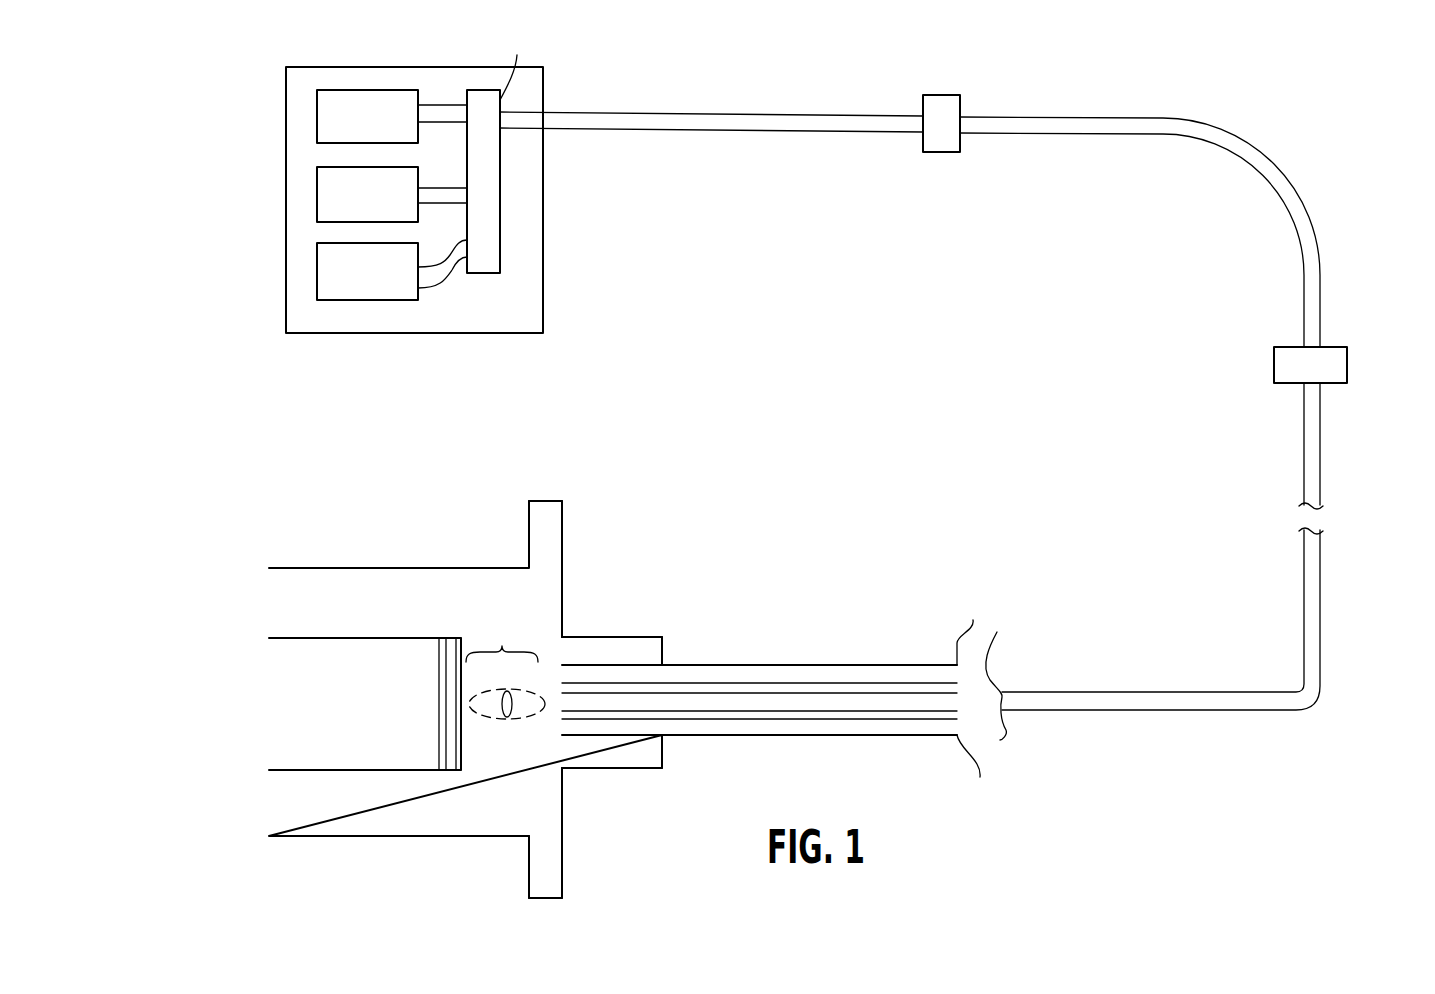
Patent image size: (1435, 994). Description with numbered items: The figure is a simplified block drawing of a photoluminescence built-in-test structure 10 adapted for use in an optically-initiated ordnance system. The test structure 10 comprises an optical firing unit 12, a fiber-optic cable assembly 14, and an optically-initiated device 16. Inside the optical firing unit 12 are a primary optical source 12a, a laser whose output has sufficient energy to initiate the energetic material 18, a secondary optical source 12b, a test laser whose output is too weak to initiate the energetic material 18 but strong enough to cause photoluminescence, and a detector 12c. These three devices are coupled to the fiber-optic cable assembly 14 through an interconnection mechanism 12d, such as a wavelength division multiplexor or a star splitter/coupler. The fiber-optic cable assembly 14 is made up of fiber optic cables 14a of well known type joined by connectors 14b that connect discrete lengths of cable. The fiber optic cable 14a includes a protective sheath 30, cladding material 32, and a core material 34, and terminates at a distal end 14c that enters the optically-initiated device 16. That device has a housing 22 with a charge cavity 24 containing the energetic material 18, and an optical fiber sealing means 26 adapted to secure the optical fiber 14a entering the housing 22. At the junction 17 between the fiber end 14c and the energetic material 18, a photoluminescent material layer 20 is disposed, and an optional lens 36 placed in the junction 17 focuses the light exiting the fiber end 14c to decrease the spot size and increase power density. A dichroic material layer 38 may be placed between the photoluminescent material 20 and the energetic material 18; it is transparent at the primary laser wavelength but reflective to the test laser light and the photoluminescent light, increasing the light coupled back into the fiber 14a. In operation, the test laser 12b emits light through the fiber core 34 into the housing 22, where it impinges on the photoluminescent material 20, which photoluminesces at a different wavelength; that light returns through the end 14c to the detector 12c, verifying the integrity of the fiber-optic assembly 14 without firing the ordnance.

The photoluminescence built-in-test structure 10 is at (743, 356).
The optical firing unit 12 is at (252, 86).
The primary optical source 12a is at (330, 92).
The secondary optical source 12b is at (325, 180).
The detector 12c is at (370, 300).
The interconnection mechanism 12d is at (492, 200).
The fiber-optic cable assembly 14 is at (1341, 134).
The fiber optic cable 14a is at (738, 113).
The connector 14b is at (942, 100).
The fiber end 14c is at (567, 718).
The optically-initiated device 16 is at (606, 589).
The junction 17 is at (502, 641).
The energetic material 18 is at (353, 650).
The photoluminescent material layer 20 is at (460, 640).
The housing 22 is at (545, 515).
The charge cavity 24 is at (305, 636).
The optical fiber sealing means 26 is at (675, 665).
The protective sheath 30 is at (755, 665).
The cladding material 32 is at (825, 690).
The core material 34 is at (878, 702).
The lens 36 is at (507, 716).
The dichroic material layer 38 is at (443, 640).